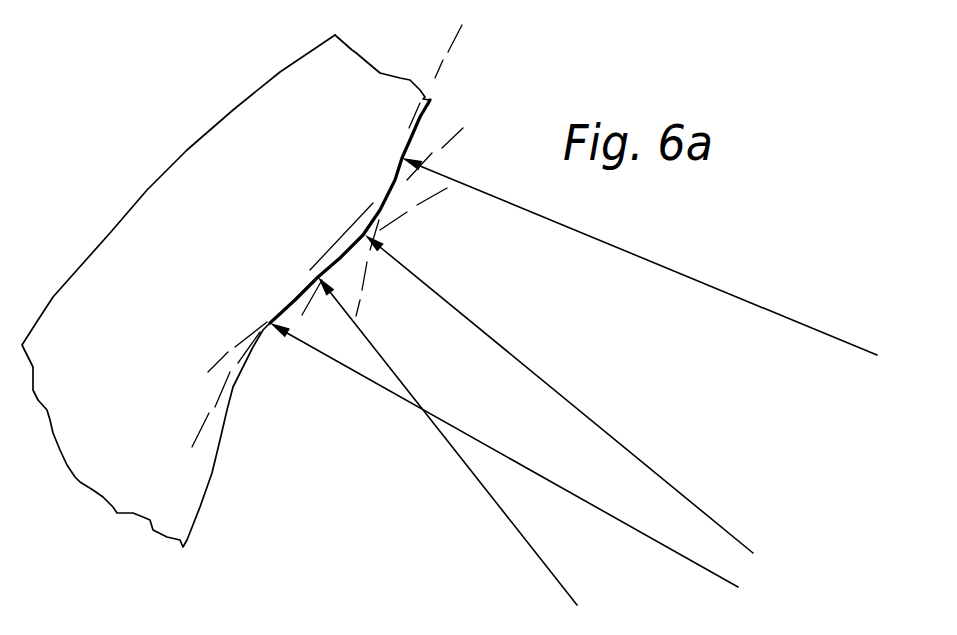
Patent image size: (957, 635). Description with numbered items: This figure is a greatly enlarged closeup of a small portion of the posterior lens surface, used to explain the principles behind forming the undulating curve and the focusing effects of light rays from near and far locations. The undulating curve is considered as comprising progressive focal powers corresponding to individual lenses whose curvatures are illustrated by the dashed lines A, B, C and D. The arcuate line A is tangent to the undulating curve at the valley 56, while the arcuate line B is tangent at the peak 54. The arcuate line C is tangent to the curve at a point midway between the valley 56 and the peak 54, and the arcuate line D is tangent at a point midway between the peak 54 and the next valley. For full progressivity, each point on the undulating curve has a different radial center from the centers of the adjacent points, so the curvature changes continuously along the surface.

The peak 54 is at (365, 235).
The valley 56 is at (268, 326).
The arcuate line A is at (200, 427).
The arcuate line B is at (452, 140).
The arcuate line C is at (430, 203).
The arcuate line D is at (435, 78).